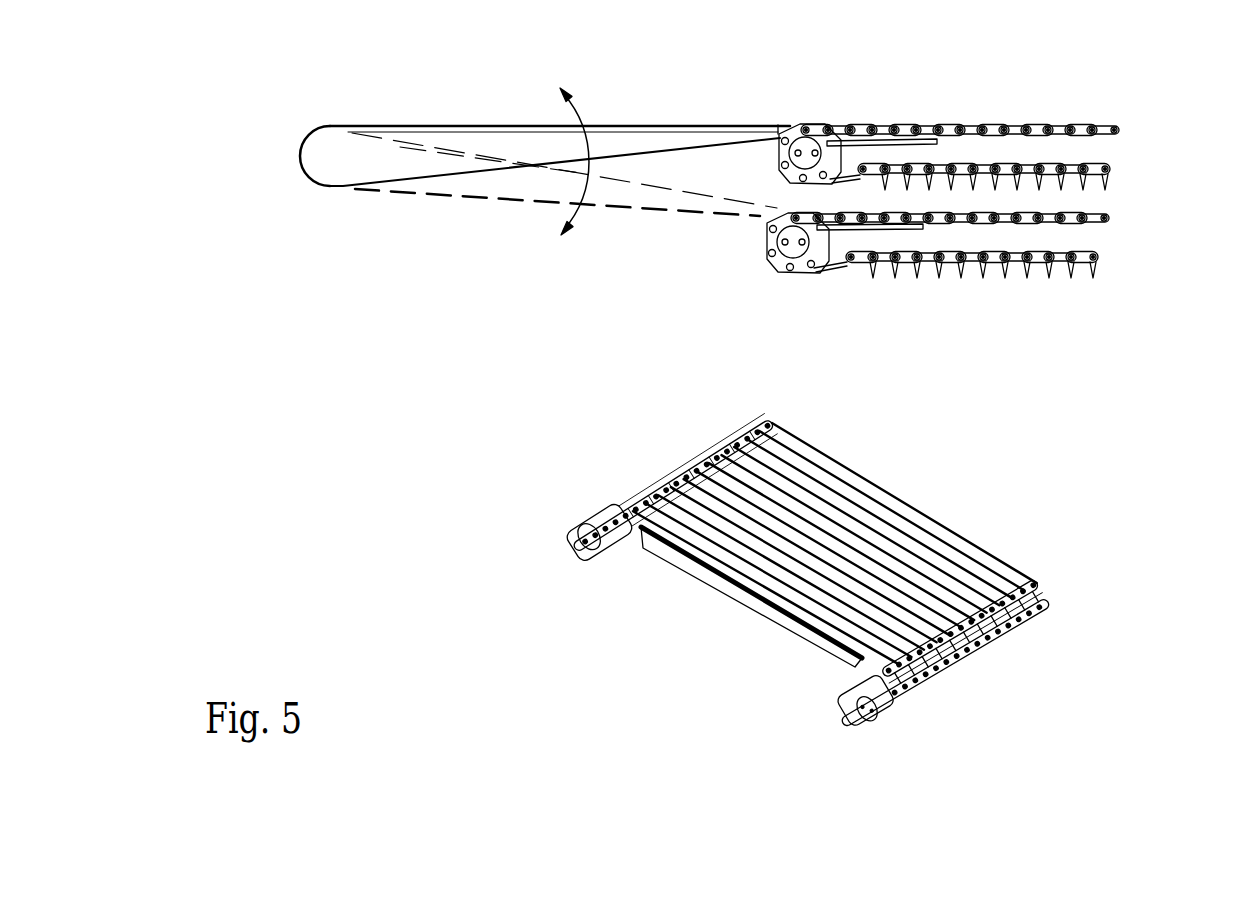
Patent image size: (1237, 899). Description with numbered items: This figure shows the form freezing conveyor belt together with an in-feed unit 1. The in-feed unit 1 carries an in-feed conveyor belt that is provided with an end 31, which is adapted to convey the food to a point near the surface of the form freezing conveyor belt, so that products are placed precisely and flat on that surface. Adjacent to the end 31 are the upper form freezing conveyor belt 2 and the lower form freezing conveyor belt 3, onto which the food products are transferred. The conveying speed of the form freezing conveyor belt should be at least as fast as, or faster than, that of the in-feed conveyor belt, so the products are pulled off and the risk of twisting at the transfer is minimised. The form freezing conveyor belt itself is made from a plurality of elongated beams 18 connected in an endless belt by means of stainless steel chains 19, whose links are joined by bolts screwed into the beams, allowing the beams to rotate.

The in-feed unit 1 is at (433, 243).
The upper form freezing conveyor belt 2 is at (1122, 148).
The lower form freezing conveyor belt 3 is at (1105, 230).
The end 31 is at (813, 122).
The elongated beam 18 is at (785, 628).
The stainless steel chain 19 is at (582, 568).